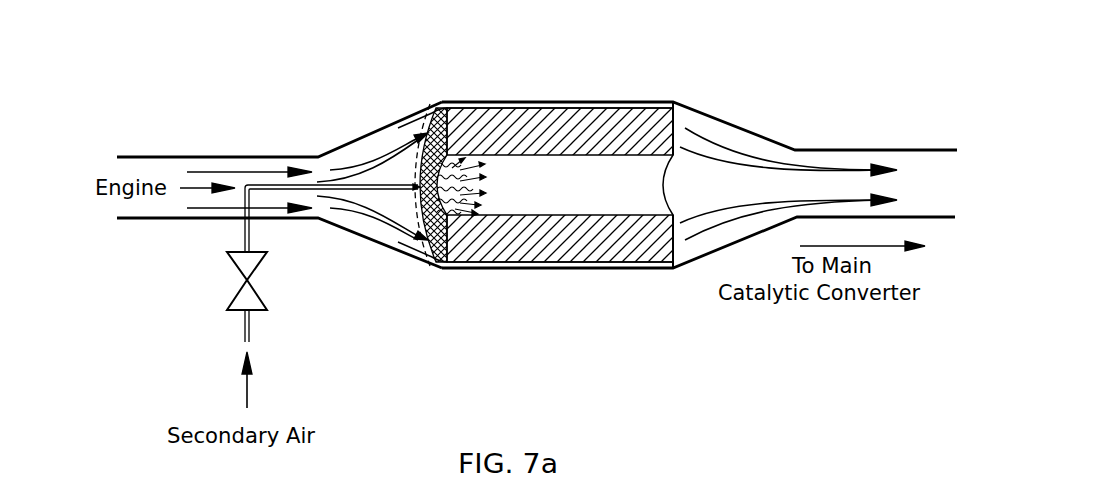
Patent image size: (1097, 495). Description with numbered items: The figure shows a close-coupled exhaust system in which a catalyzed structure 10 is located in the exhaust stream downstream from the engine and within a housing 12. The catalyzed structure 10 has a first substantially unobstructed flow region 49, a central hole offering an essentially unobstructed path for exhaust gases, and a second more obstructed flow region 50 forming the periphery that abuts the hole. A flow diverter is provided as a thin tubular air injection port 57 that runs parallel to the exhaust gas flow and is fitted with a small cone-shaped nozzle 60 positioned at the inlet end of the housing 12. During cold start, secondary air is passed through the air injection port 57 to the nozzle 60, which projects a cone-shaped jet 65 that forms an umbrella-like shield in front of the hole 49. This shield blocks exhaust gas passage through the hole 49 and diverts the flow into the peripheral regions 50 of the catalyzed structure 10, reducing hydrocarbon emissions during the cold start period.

The close-coupled catalyzed structure 10 is at (626, 194).
The housing 12 is at (372, 232).
The first substantially unobstructed flow region 49 is at (652, 182).
The second more obstructed flow region 50 is at (582, 238).
The air injection port 57 is at (415, 193).
The cone-shaped nozzle 60 is at (418, 186).
The cone-shaped jet 65 is at (488, 188).